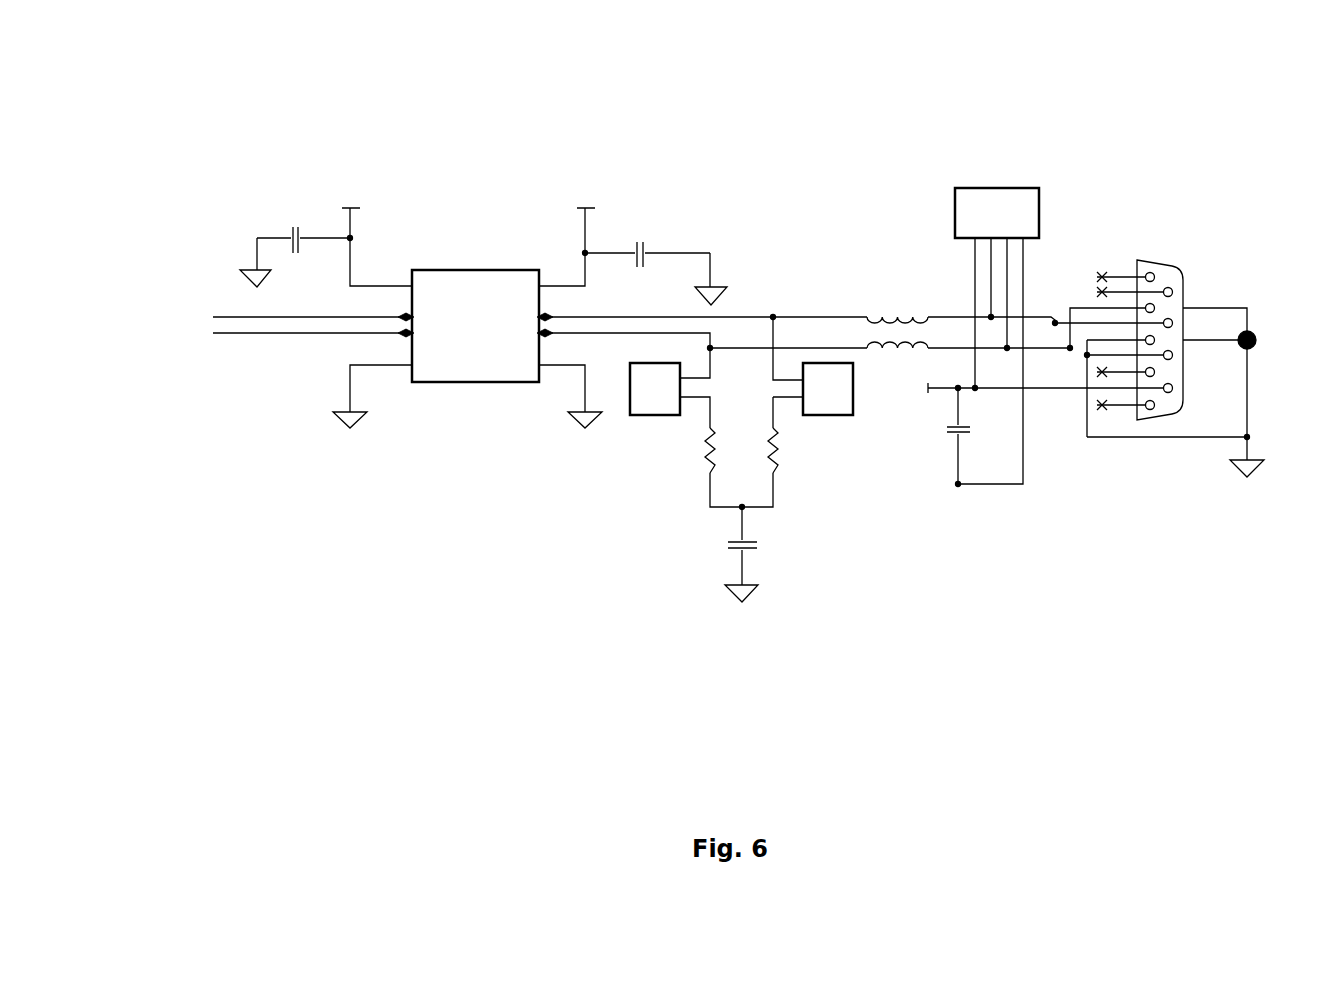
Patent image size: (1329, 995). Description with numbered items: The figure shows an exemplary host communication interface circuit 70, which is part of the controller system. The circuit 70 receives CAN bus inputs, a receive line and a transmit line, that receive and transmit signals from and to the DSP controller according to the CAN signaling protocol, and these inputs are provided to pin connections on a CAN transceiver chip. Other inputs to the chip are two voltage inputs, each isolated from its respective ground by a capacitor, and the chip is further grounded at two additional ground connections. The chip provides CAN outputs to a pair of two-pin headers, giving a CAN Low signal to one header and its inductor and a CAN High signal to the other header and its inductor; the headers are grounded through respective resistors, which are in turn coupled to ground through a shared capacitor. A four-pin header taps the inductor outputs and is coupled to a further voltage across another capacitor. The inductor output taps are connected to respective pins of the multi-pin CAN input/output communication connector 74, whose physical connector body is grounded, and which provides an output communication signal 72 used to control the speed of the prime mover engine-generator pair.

The host communication interface circuit 70 is at (410, 92).
The output communication signal 72 is at (1271, 341).
The CAN input/output communication connector 74 is at (1176, 355).